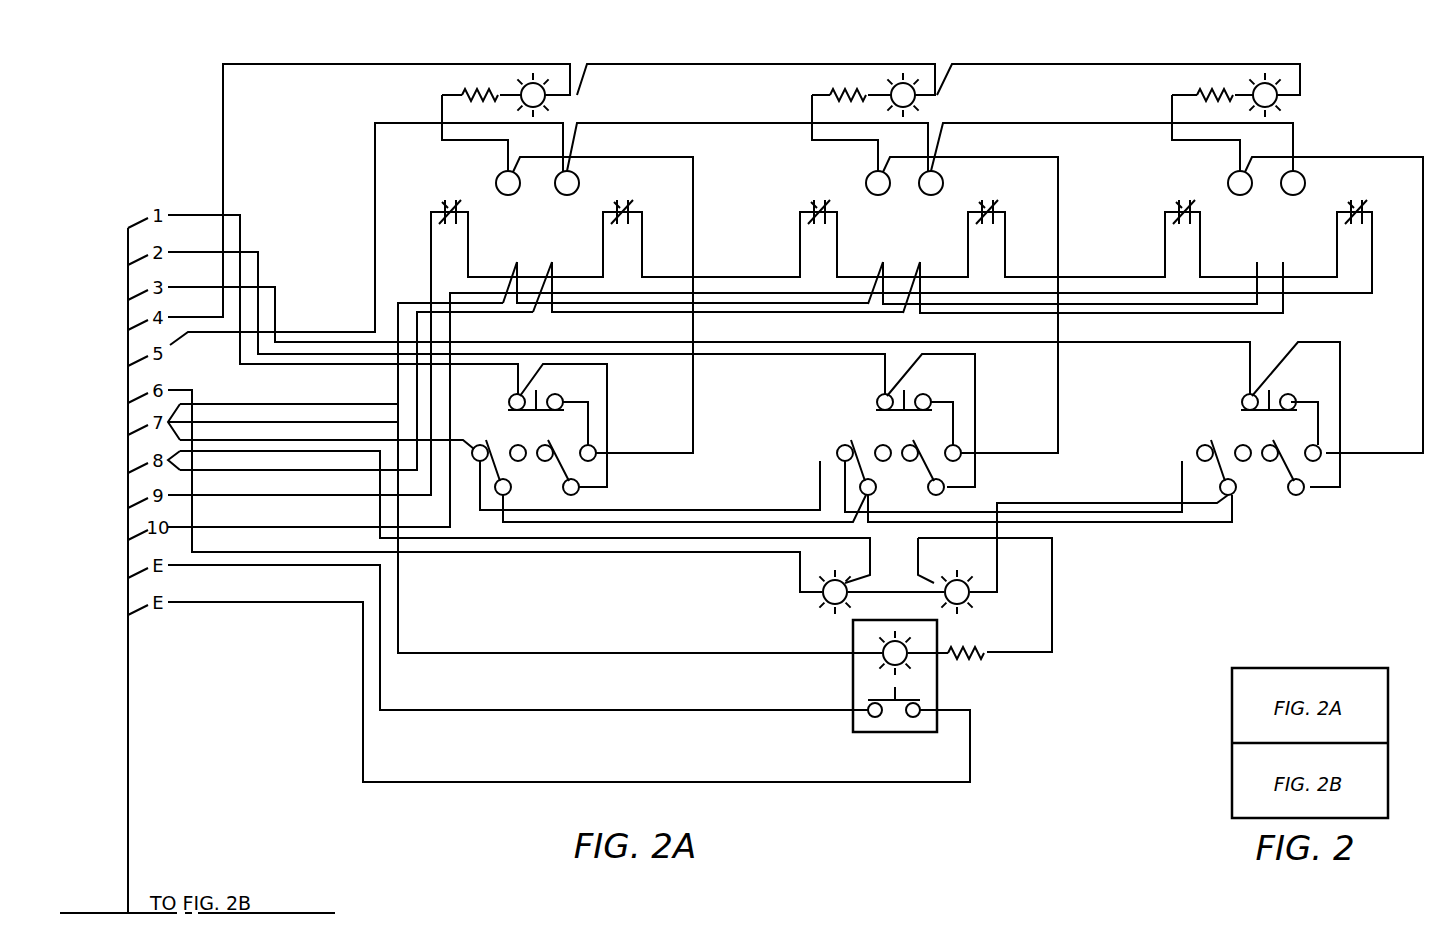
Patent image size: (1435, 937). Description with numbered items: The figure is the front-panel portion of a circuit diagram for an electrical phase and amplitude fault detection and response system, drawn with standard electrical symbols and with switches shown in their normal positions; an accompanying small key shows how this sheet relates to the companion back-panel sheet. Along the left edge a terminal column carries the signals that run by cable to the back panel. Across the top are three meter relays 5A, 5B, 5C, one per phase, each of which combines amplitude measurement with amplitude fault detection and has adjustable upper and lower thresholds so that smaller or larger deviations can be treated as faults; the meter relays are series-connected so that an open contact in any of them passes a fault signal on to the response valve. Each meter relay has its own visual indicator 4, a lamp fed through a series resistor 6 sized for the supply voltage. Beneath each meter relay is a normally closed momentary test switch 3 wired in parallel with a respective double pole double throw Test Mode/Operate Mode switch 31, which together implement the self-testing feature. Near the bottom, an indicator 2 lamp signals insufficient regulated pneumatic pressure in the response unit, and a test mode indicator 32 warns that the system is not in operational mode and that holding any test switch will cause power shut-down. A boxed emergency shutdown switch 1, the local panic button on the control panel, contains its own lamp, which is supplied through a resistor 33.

The emergency shutdown switch 1 is at (911, 732).
The indicator 2 is at (822, 601).
The test switch 3 is at (509, 400).
The indicator 4 is at (547, 74).
The meter relay 5A is at (558, 190).
The meter relay 5B is at (923, 192).
The meter relay 5C is at (1285, 194).
The resistor 6 is at (460, 93).
The Test Mode/Operate Mode switch 31 is at (532, 466).
The test mode indicator 32 is at (972, 603).
The resistor 33 is at (977, 652).